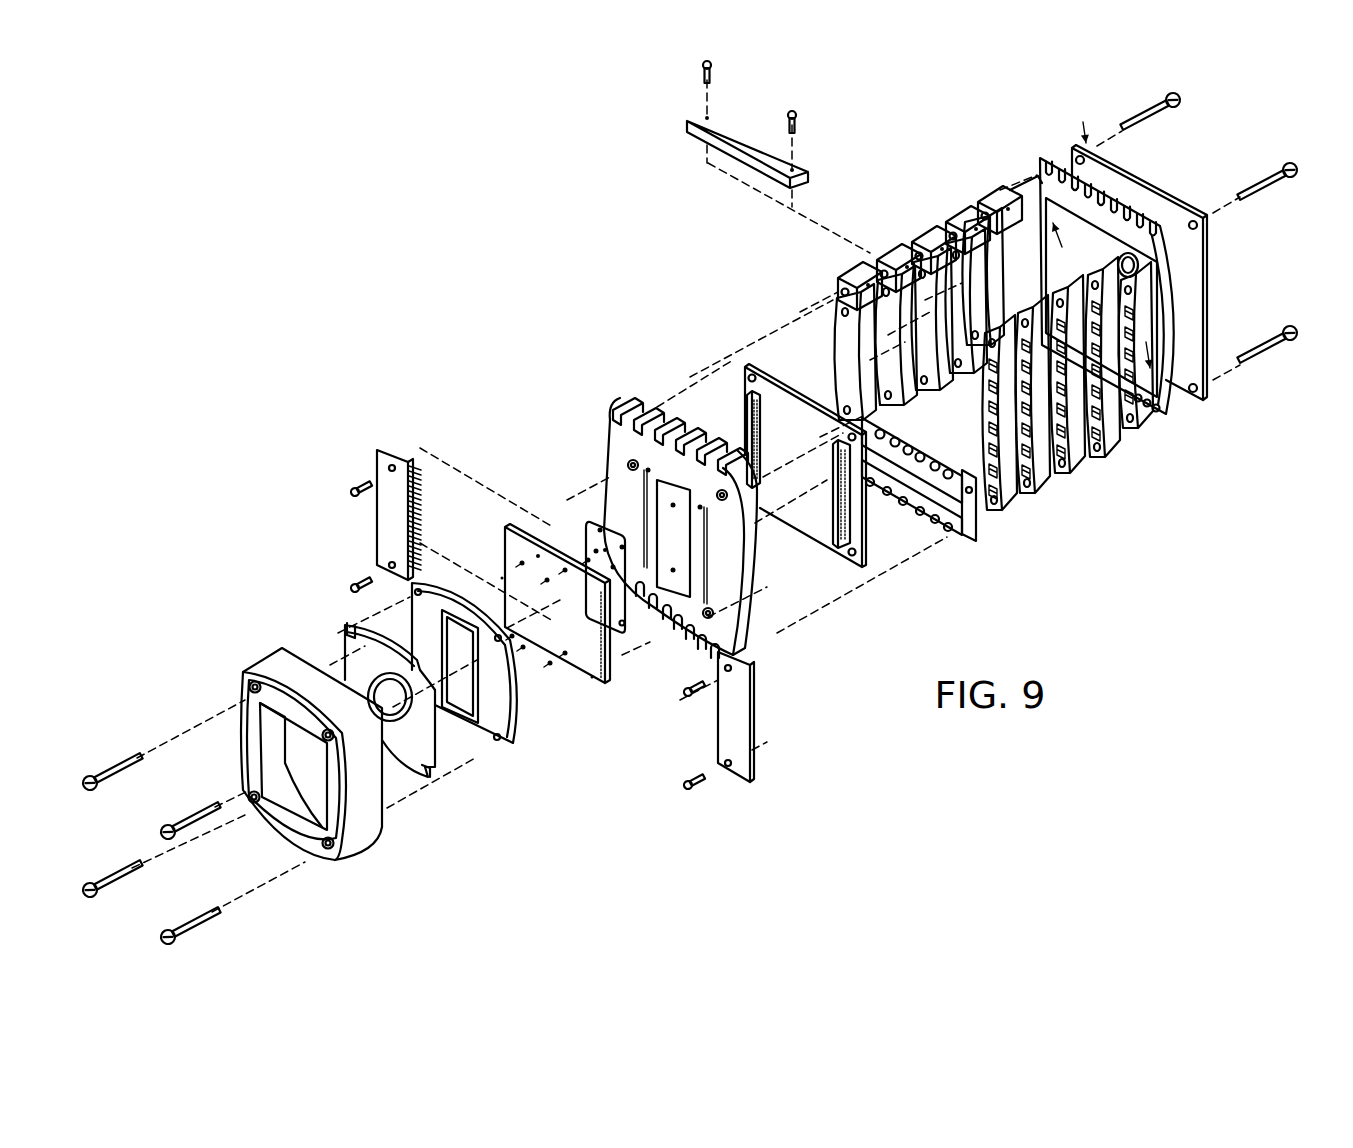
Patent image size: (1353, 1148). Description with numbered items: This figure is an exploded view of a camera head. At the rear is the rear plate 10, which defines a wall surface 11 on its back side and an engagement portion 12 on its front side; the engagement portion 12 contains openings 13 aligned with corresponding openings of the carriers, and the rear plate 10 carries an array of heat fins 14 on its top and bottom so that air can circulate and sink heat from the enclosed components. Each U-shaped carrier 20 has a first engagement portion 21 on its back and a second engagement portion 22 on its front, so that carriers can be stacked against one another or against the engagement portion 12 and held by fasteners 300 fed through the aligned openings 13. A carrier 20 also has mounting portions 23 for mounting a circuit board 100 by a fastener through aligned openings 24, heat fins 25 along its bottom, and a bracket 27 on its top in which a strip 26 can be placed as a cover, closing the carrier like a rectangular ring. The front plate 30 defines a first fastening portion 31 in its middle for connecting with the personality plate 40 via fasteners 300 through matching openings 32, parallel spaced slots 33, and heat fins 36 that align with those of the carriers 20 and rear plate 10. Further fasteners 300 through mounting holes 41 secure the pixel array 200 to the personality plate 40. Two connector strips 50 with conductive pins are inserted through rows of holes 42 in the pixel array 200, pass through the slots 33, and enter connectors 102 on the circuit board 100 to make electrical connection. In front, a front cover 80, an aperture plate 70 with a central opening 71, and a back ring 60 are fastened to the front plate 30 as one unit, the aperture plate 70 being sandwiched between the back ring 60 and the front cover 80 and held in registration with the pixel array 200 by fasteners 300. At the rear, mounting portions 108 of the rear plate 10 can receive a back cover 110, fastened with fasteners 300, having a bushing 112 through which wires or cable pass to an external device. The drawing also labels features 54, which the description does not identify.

The rear plate 10 is at (1138, 213).
The wall surface 11 is at (1170, 267).
The engagement portion 12 is at (1160, 230).
The openings 13 is at (1033, 183).
The heat fins 14 is at (1107, 193).
The carrier 20 is at (1037, 483).
The first engagement portion 21 is at (1122, 437).
The second engagement portion 22 is at (977, 490).
The mounting portions 23 is at (948, 530).
The aligned openings 24 is at (838, 316).
The heat fins 25 is at (915, 513).
The strip 26 is at (757, 140).
The bracket 27 is at (853, 268).
The front plate 30 is at (611, 425).
The first fastening portion 31 is at (680, 550).
The matching openings 32 is at (605, 550).
The slots 33 is at (705, 505).
The heat fins 36 is at (627, 402).
The personality plate 40 is at (628, 618).
The mounting holes 41 is at (538, 556).
The holes 42 is at (502, 578).
The connector strips 50 is at (390, 537).
The hole 54 is at (705, 612).
The back ring 60 is at (505, 722).
The aperture plate 70 is at (350, 640).
The opening 71 is at (424, 778).
The front cover 80 is at (273, 660).
The circuit board 100 is at (820, 523).
The connectors 102 is at (769, 475).
The mounting portions 108 is at (1104, 295).
The back cover 110 is at (1064, 120).
The bushing 112 is at (1132, 280).
The pixel array 200 is at (575, 650).
The fastener 300 is at (118, 762).